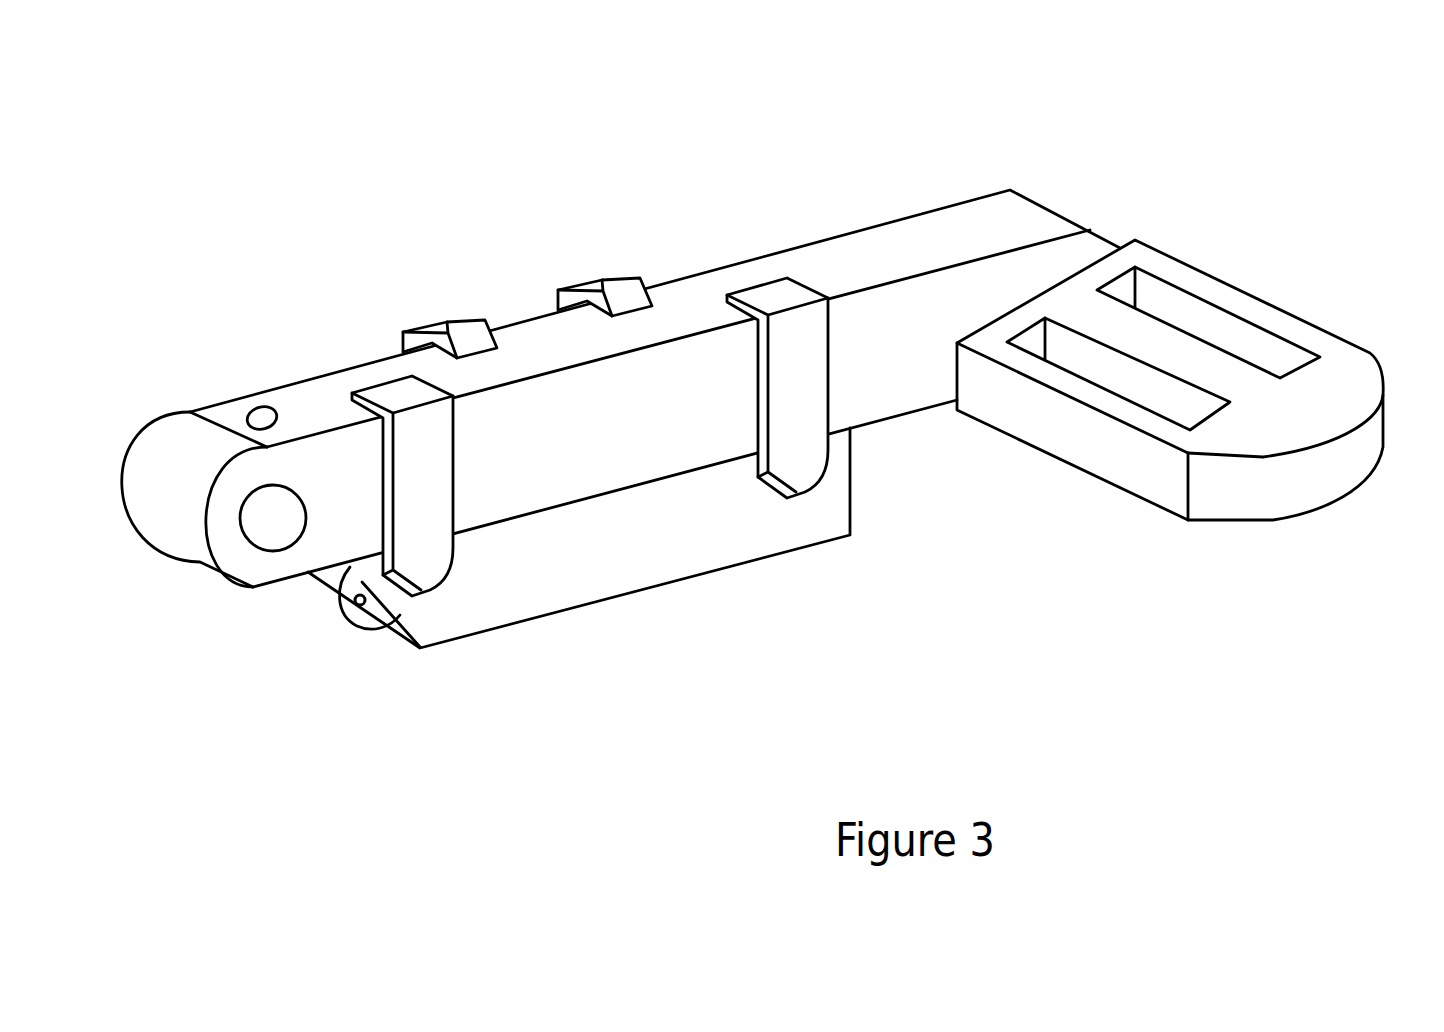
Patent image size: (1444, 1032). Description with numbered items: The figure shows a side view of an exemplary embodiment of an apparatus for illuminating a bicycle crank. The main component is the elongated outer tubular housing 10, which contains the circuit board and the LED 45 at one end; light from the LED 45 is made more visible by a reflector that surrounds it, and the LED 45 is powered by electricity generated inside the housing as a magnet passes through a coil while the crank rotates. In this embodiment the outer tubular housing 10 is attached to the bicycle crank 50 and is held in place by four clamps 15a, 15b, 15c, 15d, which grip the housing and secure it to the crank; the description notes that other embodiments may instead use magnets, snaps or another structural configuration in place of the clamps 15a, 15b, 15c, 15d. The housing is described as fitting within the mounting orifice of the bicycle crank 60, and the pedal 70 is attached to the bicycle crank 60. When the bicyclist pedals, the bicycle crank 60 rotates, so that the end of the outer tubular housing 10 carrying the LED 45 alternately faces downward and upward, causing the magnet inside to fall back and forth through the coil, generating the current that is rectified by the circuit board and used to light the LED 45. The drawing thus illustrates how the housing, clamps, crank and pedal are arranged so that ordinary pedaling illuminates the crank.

The outer tubular housing 10 is at (605, 570).
The clamp 15a is at (400, 398).
The clamp 15b is at (442, 320).
The clamp 15c is at (606, 282).
The clamp 15d is at (812, 442).
The LED 45 is at (353, 600).
The bicycle crank 50 is at (377, 618).
The bicycle crank 60 is at (942, 238).
The pedal 70 is at (1350, 385).